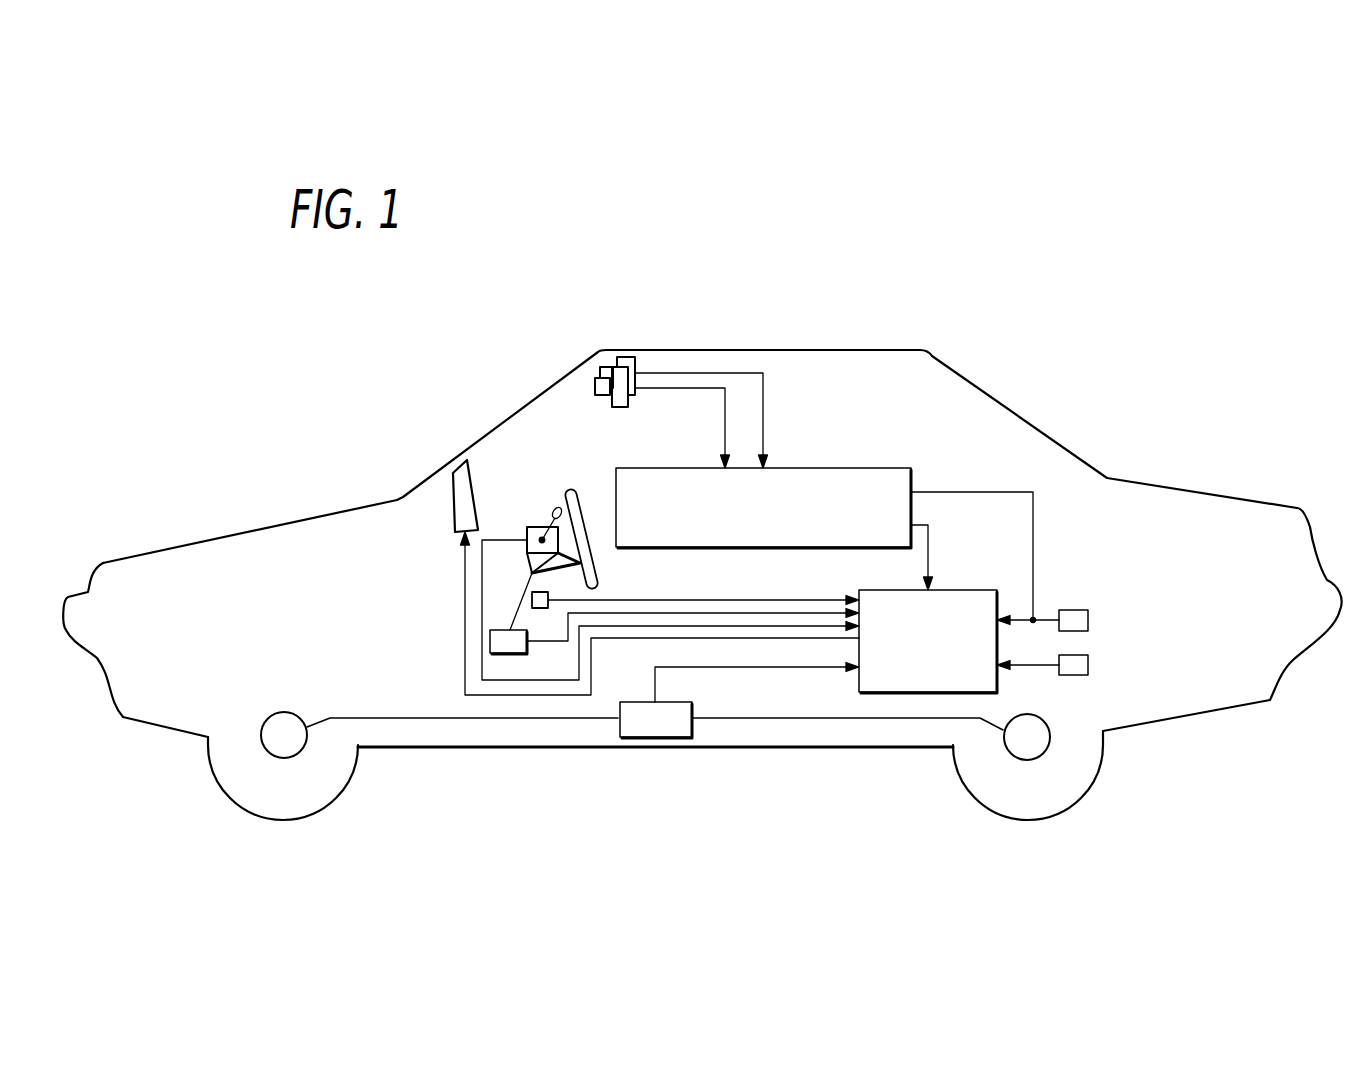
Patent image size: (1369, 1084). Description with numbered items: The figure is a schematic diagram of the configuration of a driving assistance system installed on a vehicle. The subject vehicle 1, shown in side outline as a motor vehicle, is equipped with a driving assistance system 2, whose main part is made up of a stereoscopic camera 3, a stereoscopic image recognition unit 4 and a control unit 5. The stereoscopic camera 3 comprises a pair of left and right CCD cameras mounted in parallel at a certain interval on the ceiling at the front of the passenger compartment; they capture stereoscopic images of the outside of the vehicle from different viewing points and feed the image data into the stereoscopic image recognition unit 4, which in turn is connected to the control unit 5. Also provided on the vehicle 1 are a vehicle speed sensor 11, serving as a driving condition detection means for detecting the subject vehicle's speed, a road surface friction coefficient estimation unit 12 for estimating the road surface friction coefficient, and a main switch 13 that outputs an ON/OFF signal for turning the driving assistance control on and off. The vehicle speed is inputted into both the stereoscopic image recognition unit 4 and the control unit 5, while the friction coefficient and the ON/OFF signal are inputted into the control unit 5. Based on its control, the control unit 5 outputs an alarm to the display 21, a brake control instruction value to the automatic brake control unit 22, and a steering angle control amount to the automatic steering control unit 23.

The vehicle 1 is at (918, 307).
The driving assistance system 2 is at (1015, 445).
The stereoscopic camera 3 is at (602, 363).
The stereoscopic image recognition unit 4 is at (827, 468).
The control unit 5 is at (958, 590).
The vehicle speed sensor 11 is at (1088, 620).
The road surface friction coefficient estimation unit 12 is at (1088, 665).
The main switch 13 is at (537, 608).
The display 21 is at (452, 500).
The automatic brake control unit 22 is at (653, 737).
The automatic steering control unit 23 is at (507, 653).